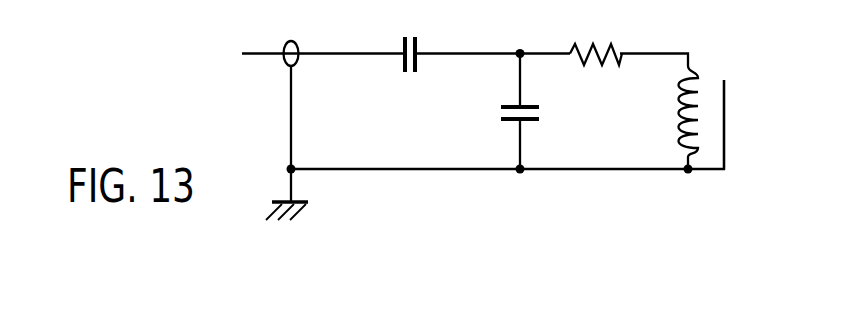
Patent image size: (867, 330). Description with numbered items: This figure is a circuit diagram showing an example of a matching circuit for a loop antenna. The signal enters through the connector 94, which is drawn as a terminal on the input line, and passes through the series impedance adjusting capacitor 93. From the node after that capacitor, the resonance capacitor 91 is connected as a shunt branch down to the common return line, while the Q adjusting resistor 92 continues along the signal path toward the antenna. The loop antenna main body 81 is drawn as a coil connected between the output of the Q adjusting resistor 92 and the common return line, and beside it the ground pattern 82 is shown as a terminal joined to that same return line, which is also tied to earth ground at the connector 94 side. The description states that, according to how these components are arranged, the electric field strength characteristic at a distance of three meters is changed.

The connector 94 is at (298, 45).
The impedance adjusting capacitor 93 is at (423, 43).
The Q adjusting resistor 92 is at (615, 45).
The resonance capacitor 91 is at (546, 114).
The loop antenna main body 81 is at (698, 80).
The ground pattern 82 is at (724, 122).